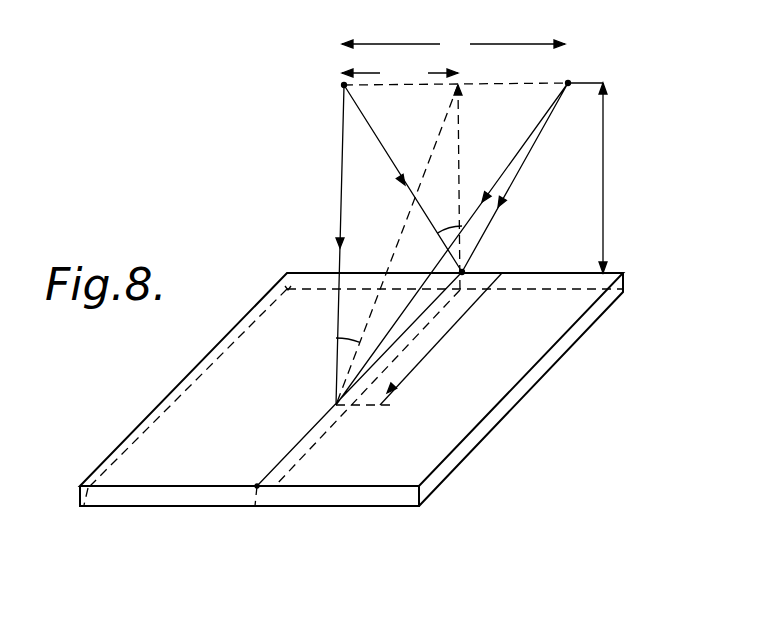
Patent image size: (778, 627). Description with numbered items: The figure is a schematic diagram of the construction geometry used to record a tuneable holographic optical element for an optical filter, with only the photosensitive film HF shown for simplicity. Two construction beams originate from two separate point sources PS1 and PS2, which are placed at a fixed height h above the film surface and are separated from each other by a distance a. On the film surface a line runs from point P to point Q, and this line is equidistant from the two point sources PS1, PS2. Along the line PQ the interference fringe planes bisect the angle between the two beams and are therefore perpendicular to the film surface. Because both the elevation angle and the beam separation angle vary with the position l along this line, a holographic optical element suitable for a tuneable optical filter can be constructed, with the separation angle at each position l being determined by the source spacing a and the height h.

The first point source PS1 is at (343, 86).
The second point source PS2 is at (568, 83).
The end point of line PQ Q is at (463, 270).
The end point of line PQ P is at (257, 486).
The photosensitive material film HF is at (209, 498).
The distance separating the two point sources a is at (453, 45).
The height from the film to the point sources h is at (599, 178).
The position along line PQ l is at (441, 339).